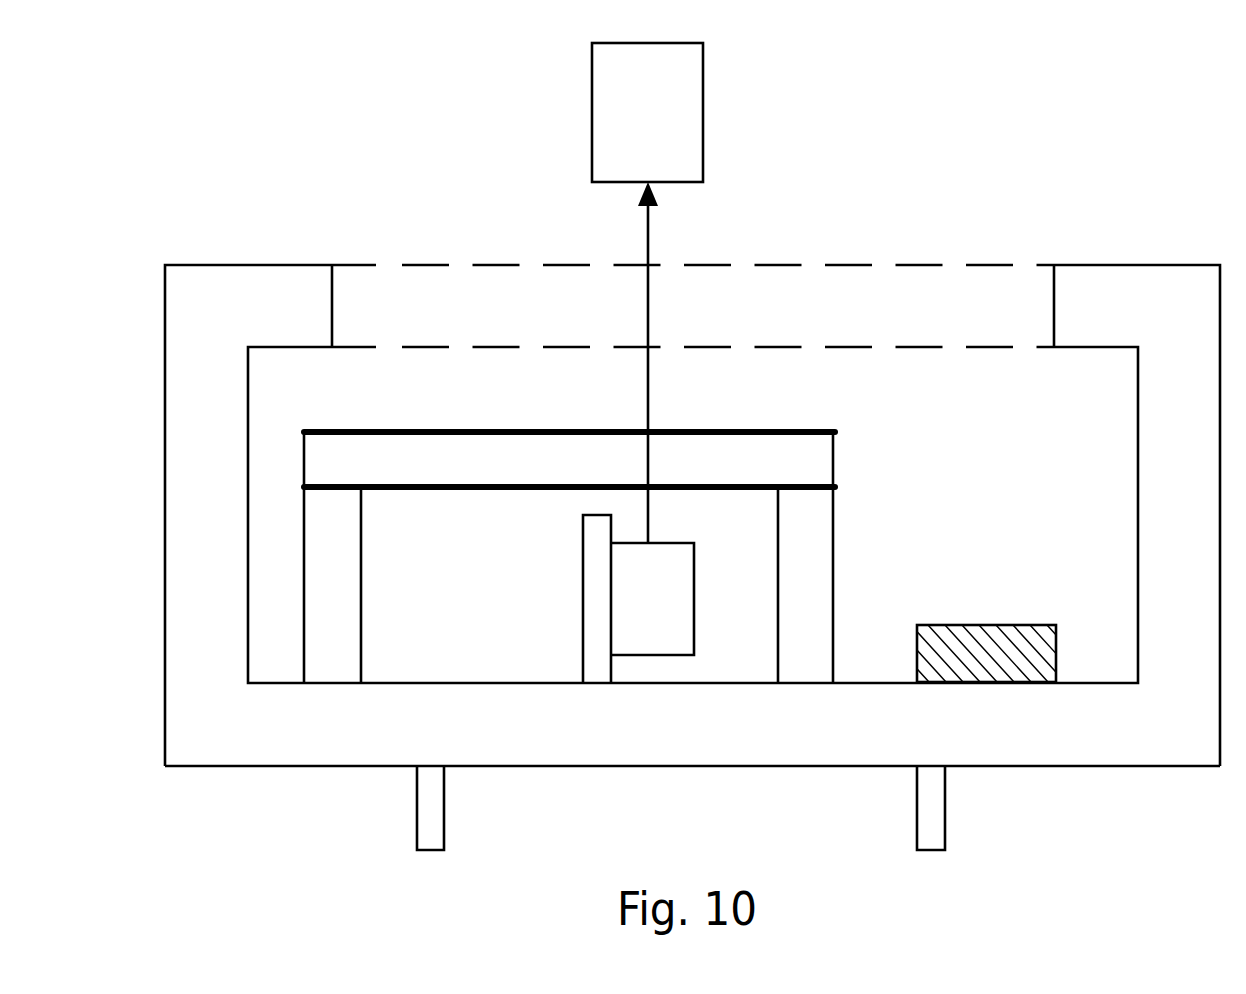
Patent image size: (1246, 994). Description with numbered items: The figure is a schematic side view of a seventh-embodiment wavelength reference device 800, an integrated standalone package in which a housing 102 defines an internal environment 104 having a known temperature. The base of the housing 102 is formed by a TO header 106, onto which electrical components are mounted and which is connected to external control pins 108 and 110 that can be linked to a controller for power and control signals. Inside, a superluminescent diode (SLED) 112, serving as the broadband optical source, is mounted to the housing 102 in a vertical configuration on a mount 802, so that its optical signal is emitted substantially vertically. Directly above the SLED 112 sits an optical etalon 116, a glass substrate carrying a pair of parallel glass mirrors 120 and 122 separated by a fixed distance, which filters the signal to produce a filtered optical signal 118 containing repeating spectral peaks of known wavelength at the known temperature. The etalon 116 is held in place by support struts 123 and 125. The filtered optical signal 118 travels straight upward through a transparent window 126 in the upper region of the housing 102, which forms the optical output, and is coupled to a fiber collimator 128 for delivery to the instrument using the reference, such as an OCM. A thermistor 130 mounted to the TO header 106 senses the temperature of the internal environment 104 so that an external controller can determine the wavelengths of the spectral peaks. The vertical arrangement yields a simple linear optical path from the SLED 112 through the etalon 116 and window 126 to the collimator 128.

The wavelength reference device 800 is at (312, 152).
The housing 102 is at (218, 265).
The internal environment 104 is at (693, 515).
The TO header 106 is at (740, 737).
The external control pin 108 is at (417, 822).
The external control pin 110 is at (917, 807).
The superluminescent diode (SLED) 112 is at (694, 590).
The optical etalon 116 is at (304, 465).
The filtered optical signal 118 is at (648, 377).
The glass mirror 120 is at (835, 487).
The glass mirror 122 is at (835, 432).
The support strut 123 is at (304, 600).
The support strut 125 is at (827, 608).
The transparent window 126 is at (915, 265).
The fiber collimator 128 is at (703, 88).
The thermistor 130 is at (1000, 625).
The mount 802 is at (583, 617).